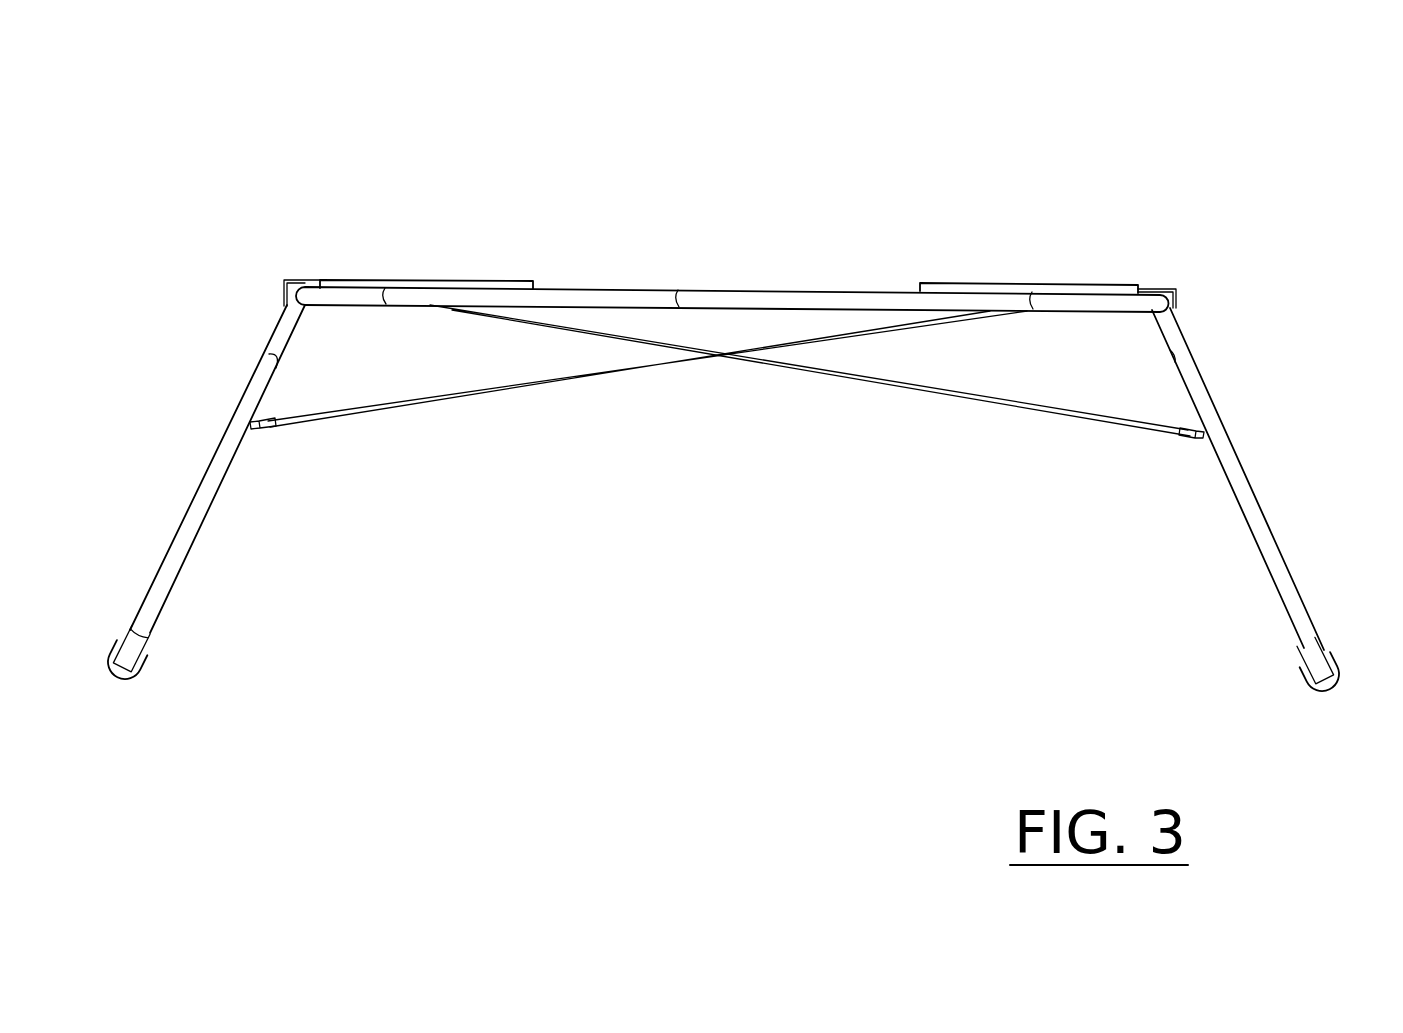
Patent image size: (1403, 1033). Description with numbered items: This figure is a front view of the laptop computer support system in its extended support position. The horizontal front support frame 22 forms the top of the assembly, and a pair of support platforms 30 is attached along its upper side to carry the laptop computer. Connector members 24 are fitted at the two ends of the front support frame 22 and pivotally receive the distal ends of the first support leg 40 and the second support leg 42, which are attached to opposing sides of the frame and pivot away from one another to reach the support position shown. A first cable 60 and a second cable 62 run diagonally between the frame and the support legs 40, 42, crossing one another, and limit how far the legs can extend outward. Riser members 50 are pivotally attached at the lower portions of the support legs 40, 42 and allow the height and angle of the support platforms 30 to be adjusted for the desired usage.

The front support frame 22 is at (733, 297).
The connector member 24 is at (290, 305).
The support platform 30 is at (423, 282).
The first support leg 40 is at (1263, 532).
The second support leg 42 is at (205, 497).
The riser member 50 is at (138, 670).
The first cable 60 is at (968, 398).
The second cable 62 is at (430, 402).